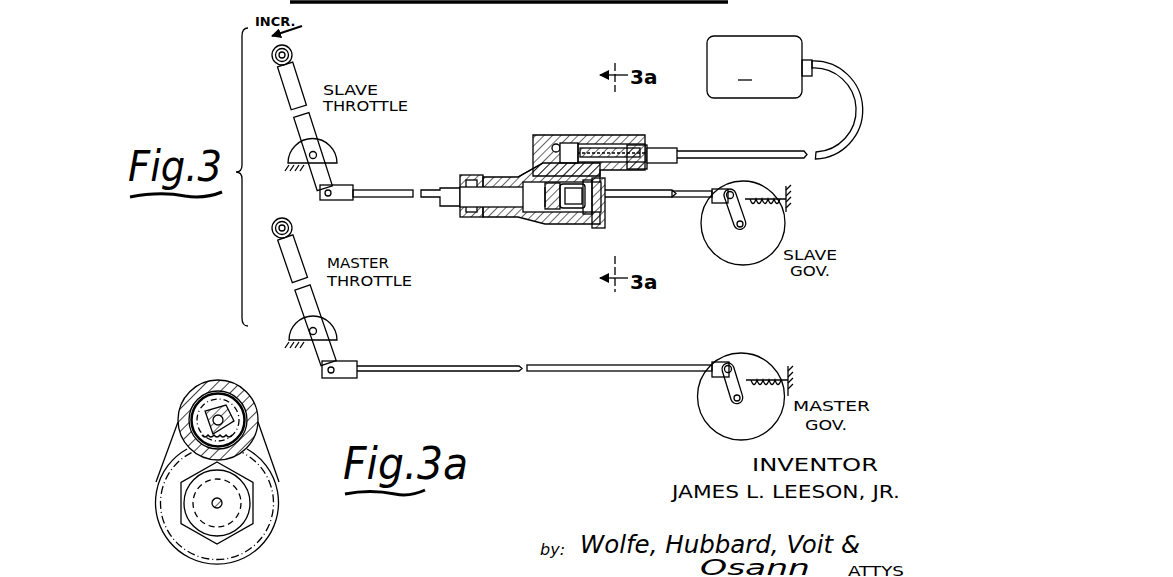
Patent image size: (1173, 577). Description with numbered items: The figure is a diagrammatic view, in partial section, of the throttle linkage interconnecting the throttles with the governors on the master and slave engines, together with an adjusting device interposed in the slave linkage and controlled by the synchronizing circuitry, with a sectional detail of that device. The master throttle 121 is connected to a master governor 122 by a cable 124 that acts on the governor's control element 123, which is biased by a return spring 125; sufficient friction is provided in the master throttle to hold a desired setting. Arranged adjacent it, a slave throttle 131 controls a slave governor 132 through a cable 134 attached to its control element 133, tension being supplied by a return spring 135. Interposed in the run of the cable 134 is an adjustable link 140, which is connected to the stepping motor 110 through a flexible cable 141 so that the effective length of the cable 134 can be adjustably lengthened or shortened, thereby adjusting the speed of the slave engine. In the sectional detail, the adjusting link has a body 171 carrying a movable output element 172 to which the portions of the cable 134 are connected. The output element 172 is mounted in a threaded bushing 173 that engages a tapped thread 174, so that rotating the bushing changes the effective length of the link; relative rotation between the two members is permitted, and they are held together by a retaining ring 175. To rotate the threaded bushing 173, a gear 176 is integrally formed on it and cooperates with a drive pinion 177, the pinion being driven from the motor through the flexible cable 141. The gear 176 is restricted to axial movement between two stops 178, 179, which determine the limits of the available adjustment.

In FIG. 3, the motor 110 is at (781, 36).
In FIG. 3, the master throttle 121 is at (293, 228).
In FIG. 3, the master governor 122 is at (755, 363).
In FIG. 3, the control element 123 is at (722, 397).
In FIG. 3, the cable 124 is at (565, 366).
In FIG. 3, the return spring 125 is at (758, 383).
In FIG. 3, the slave throttle 131 is at (293, 54).
In FIG. 3, the slave governor 132 is at (760, 188).
In FIG. 3, the control element 133 is at (722, 214).
In FIG. 3, the cable 134 is at (383, 190).
In FIG. 3A, the cable 134 is at (222, 503).
In FIG. 3, the return spring 135 is at (767, 215).
In FIG. 3, the adjustable link 140 is at (633, 183).
In FIG. 3A, the adjustable link 140 is at (238, 462).
In FIG. 3, the flexible cable 141 is at (866, 124).
In FIG. 3, the body 171 is at (498, 218).
In FIG. 3A, the body 171 is at (264, 447).
In FIG. 3, the movable output element 172 is at (601, 222).
In FIG. 3A, the movable output element 172 is at (253, 486).
In FIG. 3, the threaded bushing 173 is at (575, 223).
In FIG. 3, the tapped thread 174 is at (535, 222).
In FIG. 3, the retaining ring 175 is at (537, 162).
In FIG. 3, the gear 176 is at (588, 223).
In FIG. 3A, the gear 176 is at (272, 540).
In FIG. 3, the drive pinion 177 is at (597, 133).
In FIG. 3A, the drive pinion 177 is at (230, 421).
In FIG. 3, the stop 178 is at (571, 158).
In FIG. 3, the stop 179 is at (603, 182).